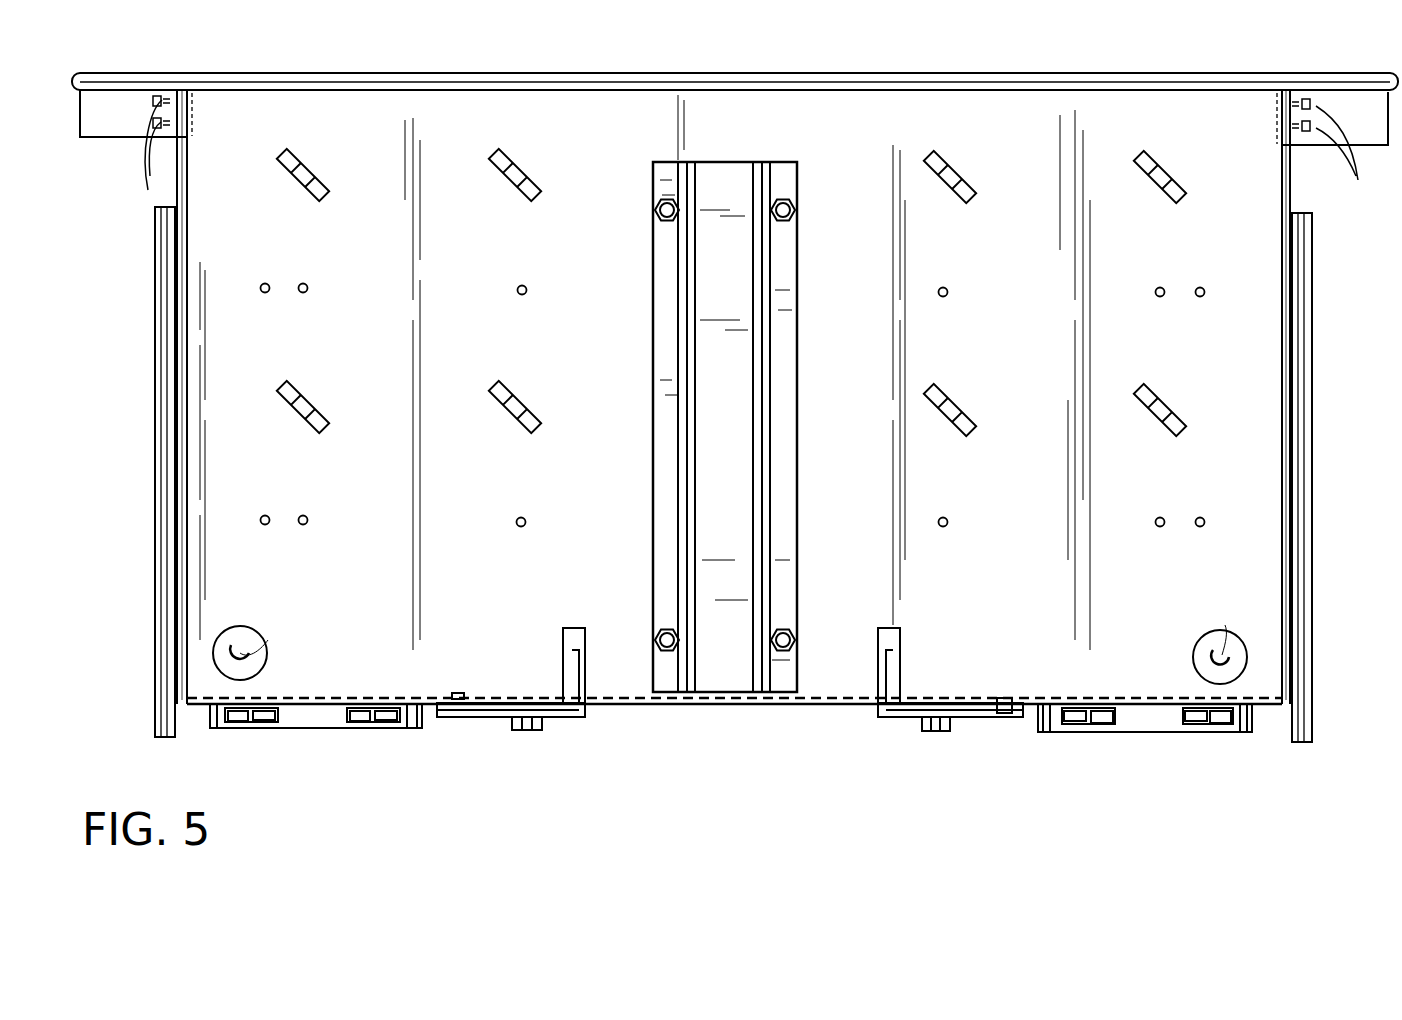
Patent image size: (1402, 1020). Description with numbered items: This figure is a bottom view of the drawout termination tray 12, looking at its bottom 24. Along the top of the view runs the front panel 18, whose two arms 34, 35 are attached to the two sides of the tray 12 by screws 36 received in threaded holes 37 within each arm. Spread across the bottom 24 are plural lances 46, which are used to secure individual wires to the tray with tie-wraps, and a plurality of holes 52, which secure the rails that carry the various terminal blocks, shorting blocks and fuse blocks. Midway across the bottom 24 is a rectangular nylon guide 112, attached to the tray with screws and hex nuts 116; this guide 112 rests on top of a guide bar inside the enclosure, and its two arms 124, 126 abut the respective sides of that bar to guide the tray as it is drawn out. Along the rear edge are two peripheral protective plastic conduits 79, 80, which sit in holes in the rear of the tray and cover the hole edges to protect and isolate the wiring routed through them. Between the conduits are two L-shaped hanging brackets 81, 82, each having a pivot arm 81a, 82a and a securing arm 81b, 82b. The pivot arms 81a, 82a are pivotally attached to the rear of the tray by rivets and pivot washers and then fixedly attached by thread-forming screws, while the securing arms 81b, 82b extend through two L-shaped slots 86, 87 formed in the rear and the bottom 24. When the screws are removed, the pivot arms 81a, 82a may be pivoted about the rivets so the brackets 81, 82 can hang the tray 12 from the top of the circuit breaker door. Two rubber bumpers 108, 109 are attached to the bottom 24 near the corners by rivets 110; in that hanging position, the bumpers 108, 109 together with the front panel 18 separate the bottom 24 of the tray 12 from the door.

The termination tray 12 is at (1170, 801).
The front panel 18 is at (1340, 84).
The bottom 24 is at (1268, 194).
The arm 34 is at (190, 138).
The arm 35 is at (1276, 140).
The screw 36 is at (750, 150).
The threaded hole 37 is at (190, 122).
The lance 46 is at (965, 187).
The hole 52 is at (306, 284).
The peripheral protective plastic conduit 79 is at (1155, 733).
The peripheral protective plastic conduit 80 is at (300, 729).
The L-shaped hanging bracket 81 is at (544, 688).
The pivot arm 81a is at (548, 700).
The securing arm 81b is at (585, 655).
The L-shaped hanging bracket 82 is at (951, 686).
The pivot arm 82a is at (940, 700).
The securing arm 82b is at (900, 665).
The L-shaped slot 86 is at (566, 630).
The L-shaped slot 87 is at (897, 640).
The rubber bumper 108 is at (258, 641).
The rubber bumper 109 is at (1224, 655).
The rivet 110 is at (241, 650).
The rectangular nylon guide 112 is at (731, 408).
The hex nut 116 is at (662, 220).
The arm 124 is at (680, 416).
The arm 126 is at (772, 414).